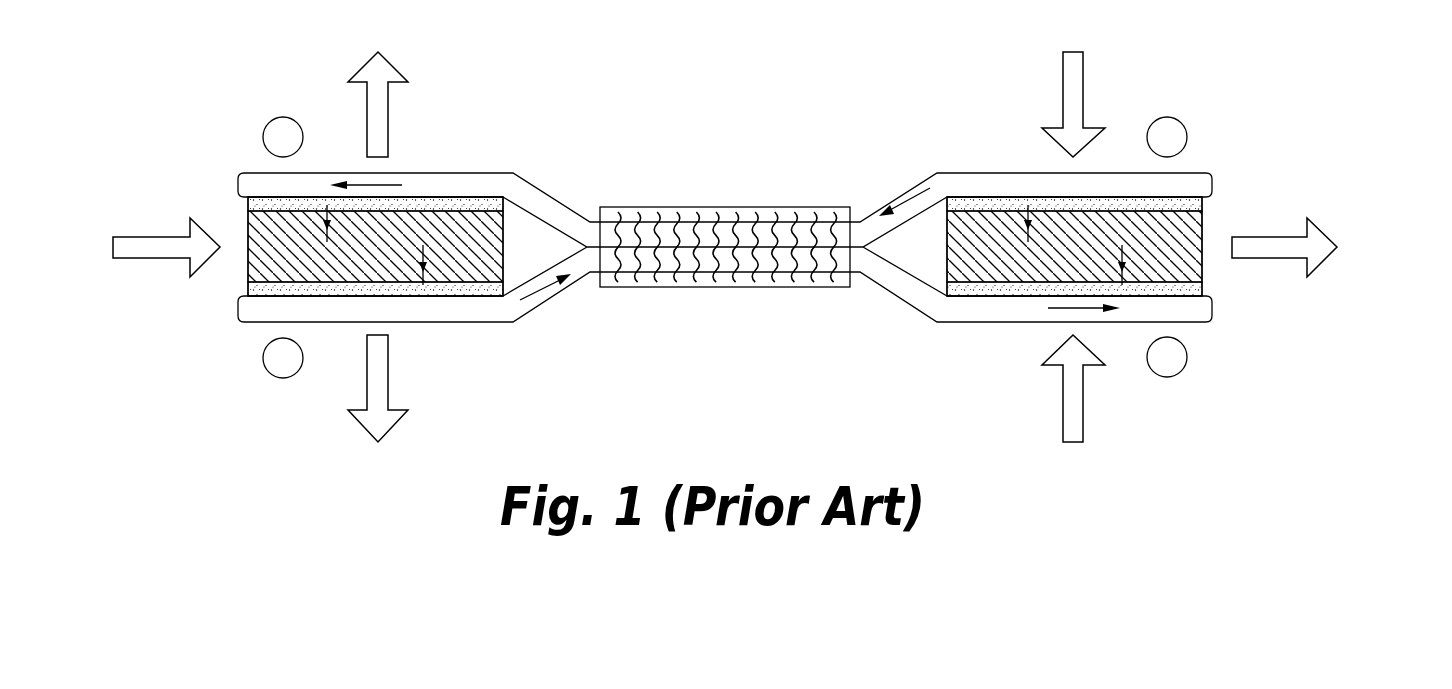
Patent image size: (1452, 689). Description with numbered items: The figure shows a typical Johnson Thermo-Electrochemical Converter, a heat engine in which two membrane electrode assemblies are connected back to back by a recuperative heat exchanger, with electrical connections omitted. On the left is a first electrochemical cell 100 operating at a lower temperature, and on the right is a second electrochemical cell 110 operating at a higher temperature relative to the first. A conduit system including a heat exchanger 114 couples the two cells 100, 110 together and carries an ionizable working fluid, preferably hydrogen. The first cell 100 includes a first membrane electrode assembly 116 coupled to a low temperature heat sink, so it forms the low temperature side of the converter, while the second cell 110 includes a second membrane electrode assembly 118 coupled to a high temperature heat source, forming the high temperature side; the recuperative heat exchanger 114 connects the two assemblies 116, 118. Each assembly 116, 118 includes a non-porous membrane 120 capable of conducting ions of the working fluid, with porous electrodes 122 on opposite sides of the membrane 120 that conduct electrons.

The first electrochemical cell 100 is at (734, 247).
The second electrochemical cell 110 is at (1157, 241).
The heat exchanger 114 is at (723, 212).
The first membrane electrode assembly 116 is at (240, 227).
The second membrane electrode assembly 118 is at (1203, 263).
The non-porous membrane 120 is at (245, 247).
The porous electrodes 122 is at (245, 205).